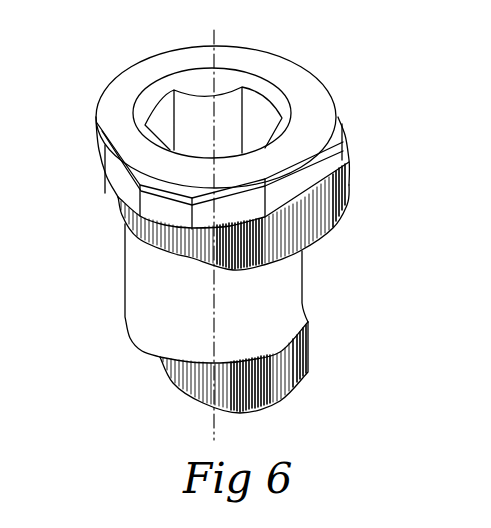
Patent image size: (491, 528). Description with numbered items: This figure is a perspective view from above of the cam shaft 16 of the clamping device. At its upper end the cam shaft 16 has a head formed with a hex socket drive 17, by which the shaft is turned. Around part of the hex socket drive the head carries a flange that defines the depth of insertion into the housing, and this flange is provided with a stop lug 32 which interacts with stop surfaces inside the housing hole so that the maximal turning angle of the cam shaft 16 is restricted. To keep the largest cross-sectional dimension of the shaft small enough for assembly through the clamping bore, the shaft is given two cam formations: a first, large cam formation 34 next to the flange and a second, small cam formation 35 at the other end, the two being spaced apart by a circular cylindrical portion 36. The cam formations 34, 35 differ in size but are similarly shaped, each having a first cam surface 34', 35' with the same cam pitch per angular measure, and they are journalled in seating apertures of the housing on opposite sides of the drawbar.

The cam shaft 16 is at (108, 72).
The hex socket drive 17 is at (235, 107).
The stop lug 32 is at (160, 184).
The first, large cam formation 34 is at (282, 201).
The first cam surface of the large cam formation 34' is at (266, 216).
The second, small cam formation 35 is at (288, 374).
The first cam surface of the small cam formation 35' is at (262, 376).
The circular cylindrical portion 36 is at (288, 283).